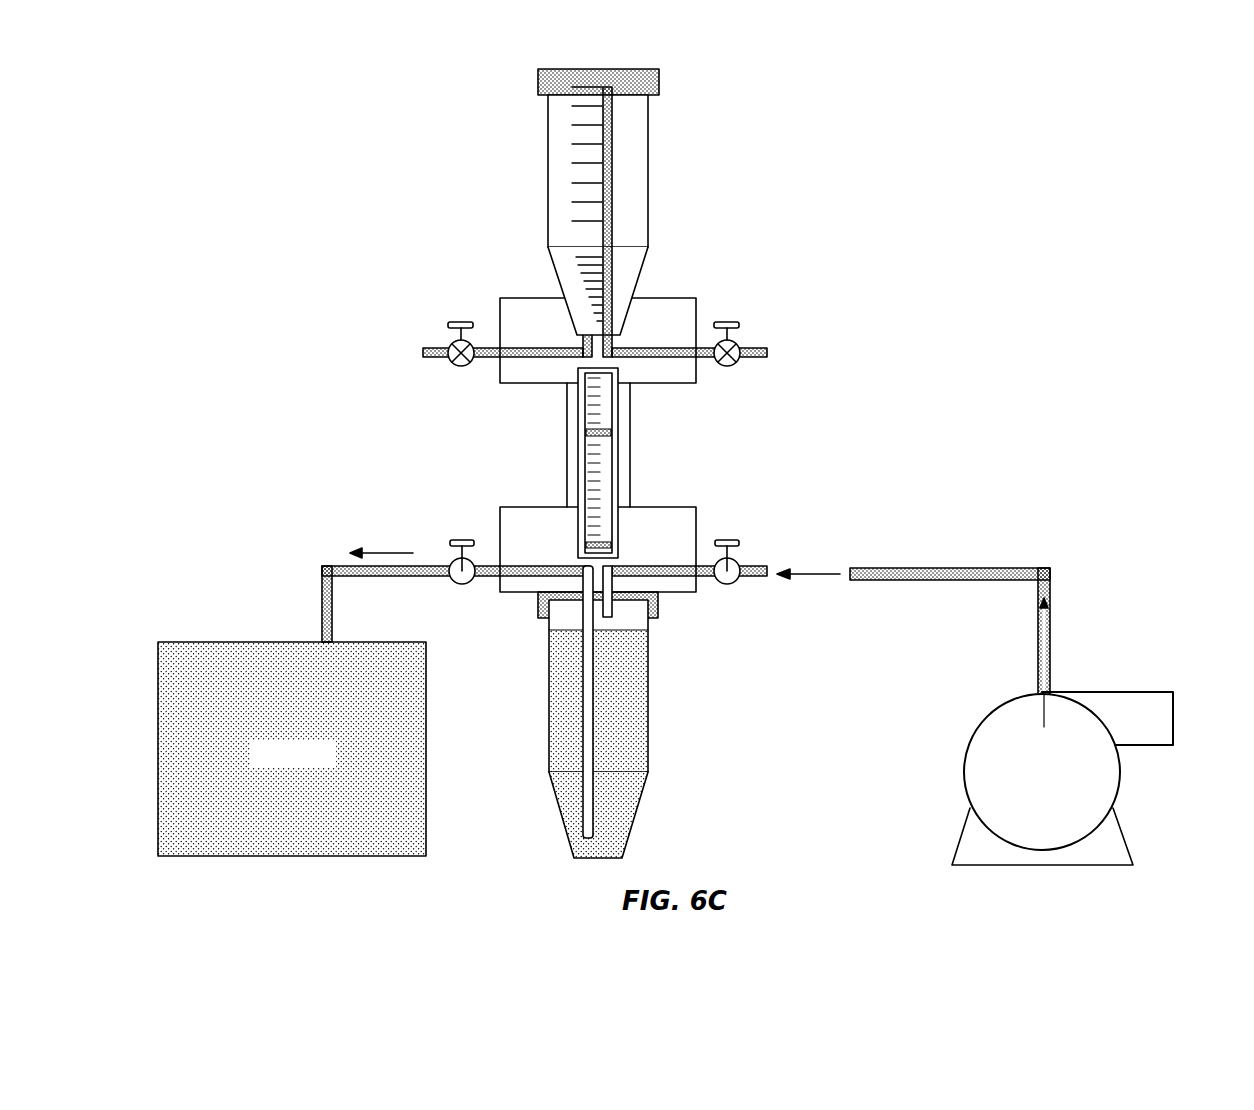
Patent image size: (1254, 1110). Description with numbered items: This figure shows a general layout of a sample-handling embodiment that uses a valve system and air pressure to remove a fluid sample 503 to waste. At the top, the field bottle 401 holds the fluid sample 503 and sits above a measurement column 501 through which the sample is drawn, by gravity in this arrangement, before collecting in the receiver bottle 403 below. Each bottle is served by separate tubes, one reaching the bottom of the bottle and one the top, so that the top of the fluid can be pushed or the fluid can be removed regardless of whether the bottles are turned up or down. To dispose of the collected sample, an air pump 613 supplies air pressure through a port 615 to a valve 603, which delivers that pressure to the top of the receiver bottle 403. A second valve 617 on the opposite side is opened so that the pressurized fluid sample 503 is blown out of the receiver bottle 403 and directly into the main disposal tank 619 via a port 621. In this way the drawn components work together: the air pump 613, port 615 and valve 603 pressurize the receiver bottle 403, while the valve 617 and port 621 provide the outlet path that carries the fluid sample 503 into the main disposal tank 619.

The field bottle 401 is at (538, 80).
The measurement column 501 is at (567, 450).
The receiver bottle 403 is at (635, 712).
The fluid sample 503 is at (627, 712).
The valve 603 is at (737, 585).
The port 615 is at (935, 568).
The air pump 613 is at (1088, 692).
The valve 617 is at (452, 583).
The main disposal tank 619 is at (243, 641).
The port 621 is at (387, 553).